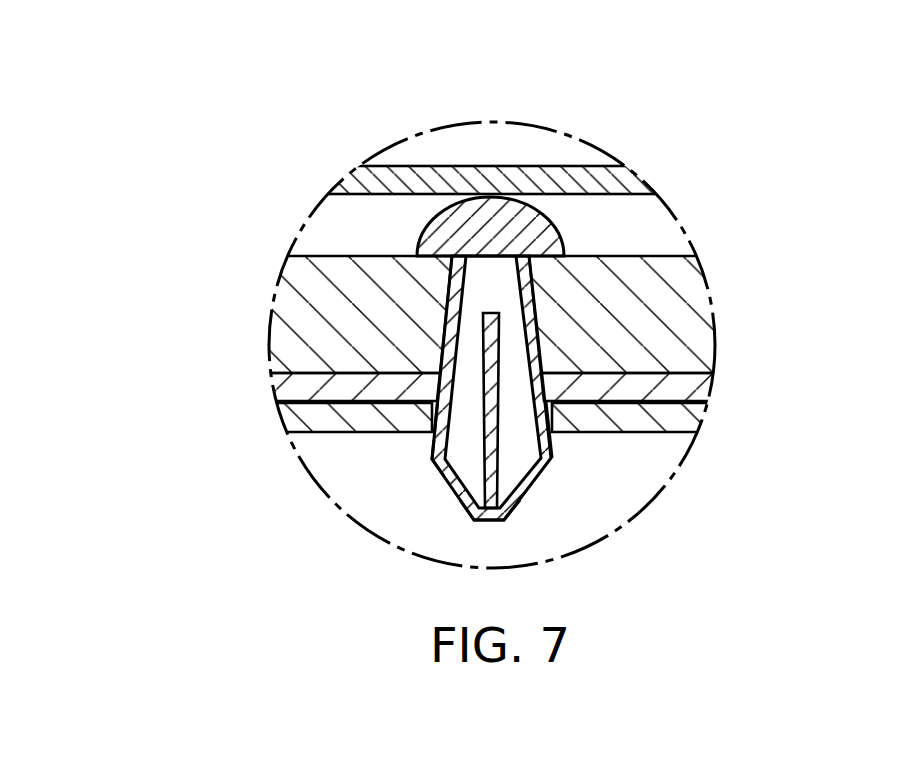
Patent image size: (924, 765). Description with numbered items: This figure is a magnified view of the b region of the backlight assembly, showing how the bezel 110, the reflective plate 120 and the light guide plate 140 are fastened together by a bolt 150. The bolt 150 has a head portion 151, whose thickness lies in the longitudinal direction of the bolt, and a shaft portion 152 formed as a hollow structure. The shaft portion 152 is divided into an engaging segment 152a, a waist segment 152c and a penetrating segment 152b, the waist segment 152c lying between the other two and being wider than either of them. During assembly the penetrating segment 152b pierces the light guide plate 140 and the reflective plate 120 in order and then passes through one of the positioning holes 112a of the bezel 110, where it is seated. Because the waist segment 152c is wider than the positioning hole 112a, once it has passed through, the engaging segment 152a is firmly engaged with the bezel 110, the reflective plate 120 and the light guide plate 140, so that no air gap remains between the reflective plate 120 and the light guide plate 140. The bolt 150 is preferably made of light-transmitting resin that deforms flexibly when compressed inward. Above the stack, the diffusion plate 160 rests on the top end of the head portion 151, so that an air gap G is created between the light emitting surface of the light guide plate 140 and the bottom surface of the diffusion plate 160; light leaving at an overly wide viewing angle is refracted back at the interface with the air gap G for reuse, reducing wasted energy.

The b region b is at (550, 128).
The diffusion plate 160 is at (630, 187).
The air gap G is at (650, 228).
The light guide plate 140 is at (690, 315).
The reflective plate 120 is at (690, 387).
The bezel 110 is at (690, 420).
The positioning hole 112a is at (548, 433).
The bolt 150 is at (160, 223).
The head portion 151 is at (467, 225).
The shaft portion 152 is at (466, 342).
The engaging segment 152a is at (433, 423).
The penetrating segment 152b is at (474, 490).
The waist segment 152c is at (433, 460).